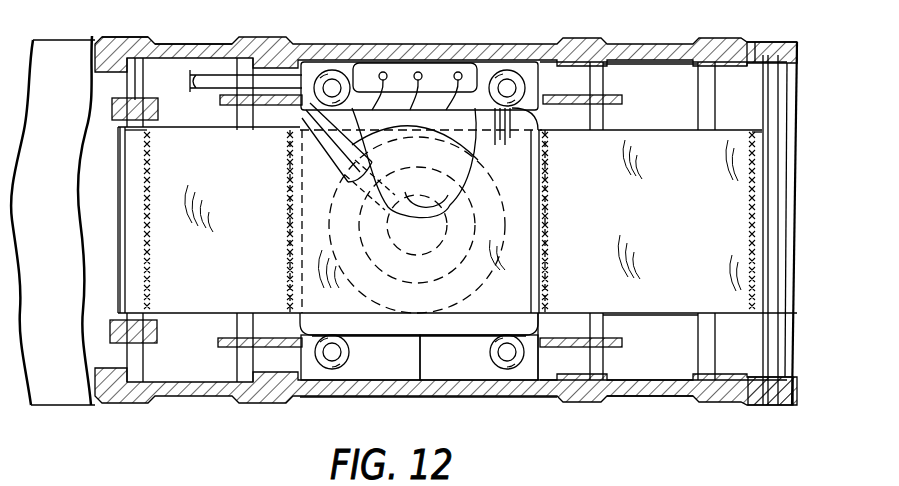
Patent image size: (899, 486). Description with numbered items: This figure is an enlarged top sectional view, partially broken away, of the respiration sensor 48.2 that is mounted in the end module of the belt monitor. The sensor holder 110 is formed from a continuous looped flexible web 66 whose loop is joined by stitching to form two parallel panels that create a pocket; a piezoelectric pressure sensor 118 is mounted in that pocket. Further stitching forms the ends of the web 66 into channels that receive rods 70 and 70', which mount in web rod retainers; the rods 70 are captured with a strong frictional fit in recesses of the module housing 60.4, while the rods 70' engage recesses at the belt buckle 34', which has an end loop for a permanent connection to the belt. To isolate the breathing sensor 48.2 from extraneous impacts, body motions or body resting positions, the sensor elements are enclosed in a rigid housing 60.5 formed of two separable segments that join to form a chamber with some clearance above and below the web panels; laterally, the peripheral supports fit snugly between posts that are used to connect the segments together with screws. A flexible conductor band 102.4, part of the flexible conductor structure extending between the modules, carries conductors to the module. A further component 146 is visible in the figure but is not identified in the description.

The belt buckle 34' is at (758, 23).
The sensor holder 110 is at (661, 126).
The flexible conductor band 102.4 is at (213, 90).
The terminal connector 146 is at (365, 125).
The rods 70' is at (736, 230).
The rods 70 is at (77, 237).
The flexible web 66 is at (660, 313).
The piezoelectric pressure sensor 118 is at (377, 334).
The housing 60.4 is at (88, 407).
The rigid housing 60.5 is at (409, 400).
The respiration transducer 48.2 is at (473, 354).